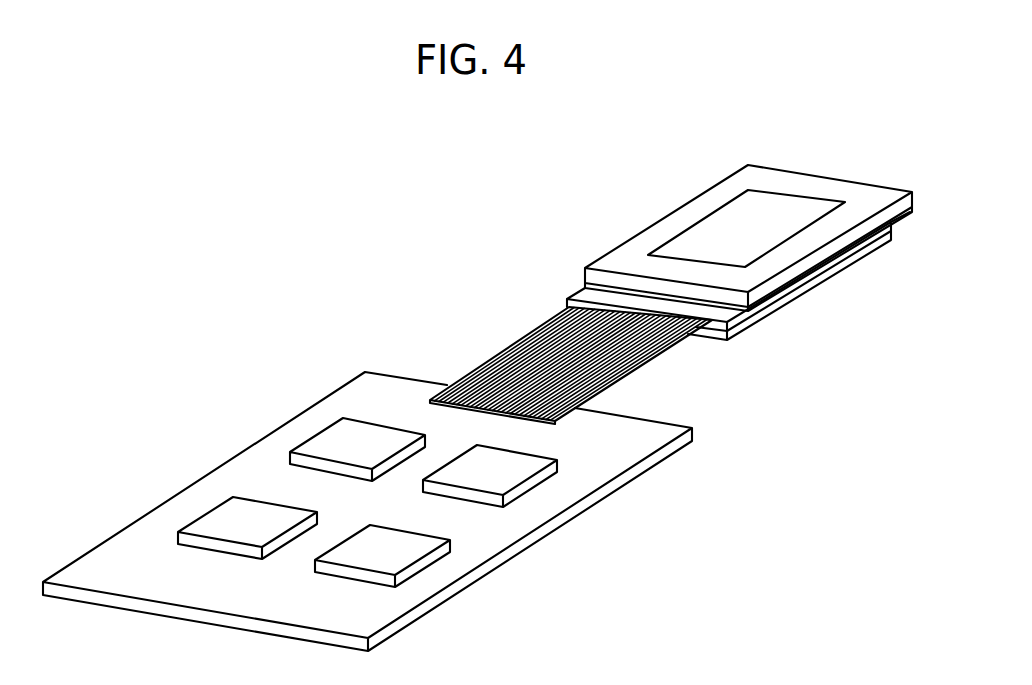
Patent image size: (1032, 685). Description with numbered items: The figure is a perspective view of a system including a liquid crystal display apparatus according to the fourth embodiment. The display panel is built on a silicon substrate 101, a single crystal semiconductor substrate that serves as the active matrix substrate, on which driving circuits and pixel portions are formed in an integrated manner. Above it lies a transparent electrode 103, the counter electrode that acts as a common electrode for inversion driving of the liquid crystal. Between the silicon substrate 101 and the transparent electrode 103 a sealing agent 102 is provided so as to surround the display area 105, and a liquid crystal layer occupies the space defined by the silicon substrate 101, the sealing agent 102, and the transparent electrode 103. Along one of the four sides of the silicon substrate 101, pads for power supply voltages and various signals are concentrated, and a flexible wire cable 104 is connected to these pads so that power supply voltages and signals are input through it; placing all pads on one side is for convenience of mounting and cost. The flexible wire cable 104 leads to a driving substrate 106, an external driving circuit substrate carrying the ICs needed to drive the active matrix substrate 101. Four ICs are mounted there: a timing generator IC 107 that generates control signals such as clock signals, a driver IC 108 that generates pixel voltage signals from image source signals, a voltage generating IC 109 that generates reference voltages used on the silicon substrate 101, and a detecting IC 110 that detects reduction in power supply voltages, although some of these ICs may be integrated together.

The silicon substrate 101 is at (767, 312).
The sealing agent 102 is at (814, 274).
The transparent electrode 103 is at (847, 237).
The flexible wire cable 104 is at (633, 366).
The display area 105 is at (730, 213).
The driving substrate 106 is at (603, 468).
The timing generator IC 107 is at (230, 515).
The driver IC 108 is at (338, 442).
The voltage generating IC 109 is at (493, 472).
The detecting IC 110 is at (400, 553).